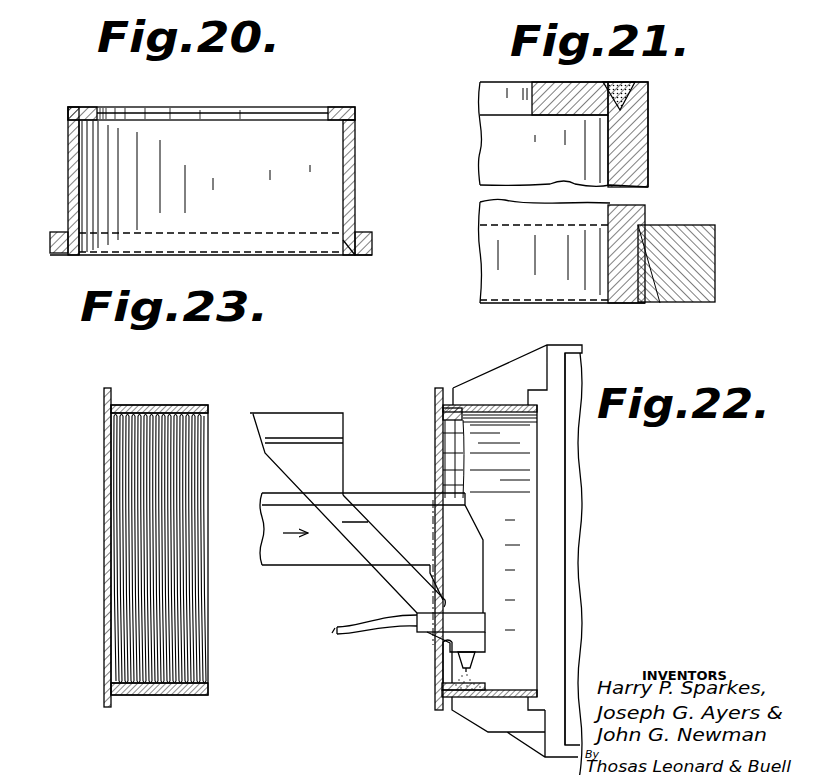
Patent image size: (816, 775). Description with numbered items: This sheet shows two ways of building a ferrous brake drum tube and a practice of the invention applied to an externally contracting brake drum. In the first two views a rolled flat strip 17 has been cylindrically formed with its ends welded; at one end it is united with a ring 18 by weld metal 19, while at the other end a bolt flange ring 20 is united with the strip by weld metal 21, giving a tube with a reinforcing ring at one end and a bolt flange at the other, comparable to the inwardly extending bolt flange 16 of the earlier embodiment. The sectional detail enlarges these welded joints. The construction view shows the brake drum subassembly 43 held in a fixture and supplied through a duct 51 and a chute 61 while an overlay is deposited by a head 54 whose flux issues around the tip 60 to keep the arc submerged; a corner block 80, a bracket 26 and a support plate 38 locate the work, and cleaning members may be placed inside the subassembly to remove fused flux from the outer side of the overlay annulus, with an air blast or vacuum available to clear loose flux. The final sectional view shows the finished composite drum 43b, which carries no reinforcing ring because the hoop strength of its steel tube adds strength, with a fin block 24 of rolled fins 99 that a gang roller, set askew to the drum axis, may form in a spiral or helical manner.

In FIG. 20, the rolled flat strip 17 is at (357, 150).
In FIG. 21, the rolled flat strip 17 is at (630, 192).
In FIG. 20, the ring 18 is at (360, 232).
In FIG. 21, the ring 18 is at (712, 258).
In FIG. 20, the weld metal 19 is at (348, 257).
In FIG. 21, the weld metal 19 is at (660, 303).
In FIG. 20, the bolt flange ring 20 is at (338, 107).
In FIG. 21, the bolt flange ring 20 is at (550, 87).
In FIG. 20, the weld metal 21 is at (352, 107).
In FIG. 21, the weld metal 21 is at (622, 83).
In FIG. 23, the bolt flange 16 is at (104, 396).
In FIG. 22, the bolt flange 16 is at (440, 388).
In FIG. 23, the fin block 24 is at (172, 407).
In FIG. 23, the drum 43b is at (182, 410).
In FIG. 23, the fins 99 is at (123, 423).
In FIG. 22, the corner block 80 is at (437, 420).
In FIG. 22, the subassembly 43 is at (497, 413).
In FIG. 22, the frame bracket 26 is at (527, 424).
In FIG. 22, the support plate 38 is at (575, 370).
In FIG. 22, the hopper chute 61 is at (315, 457).
In FIG. 22, the duct 51 is at (420, 542).
In FIG. 22, the head 54 is at (442, 650).
In FIG. 22, the tip 60 is at (440, 678).